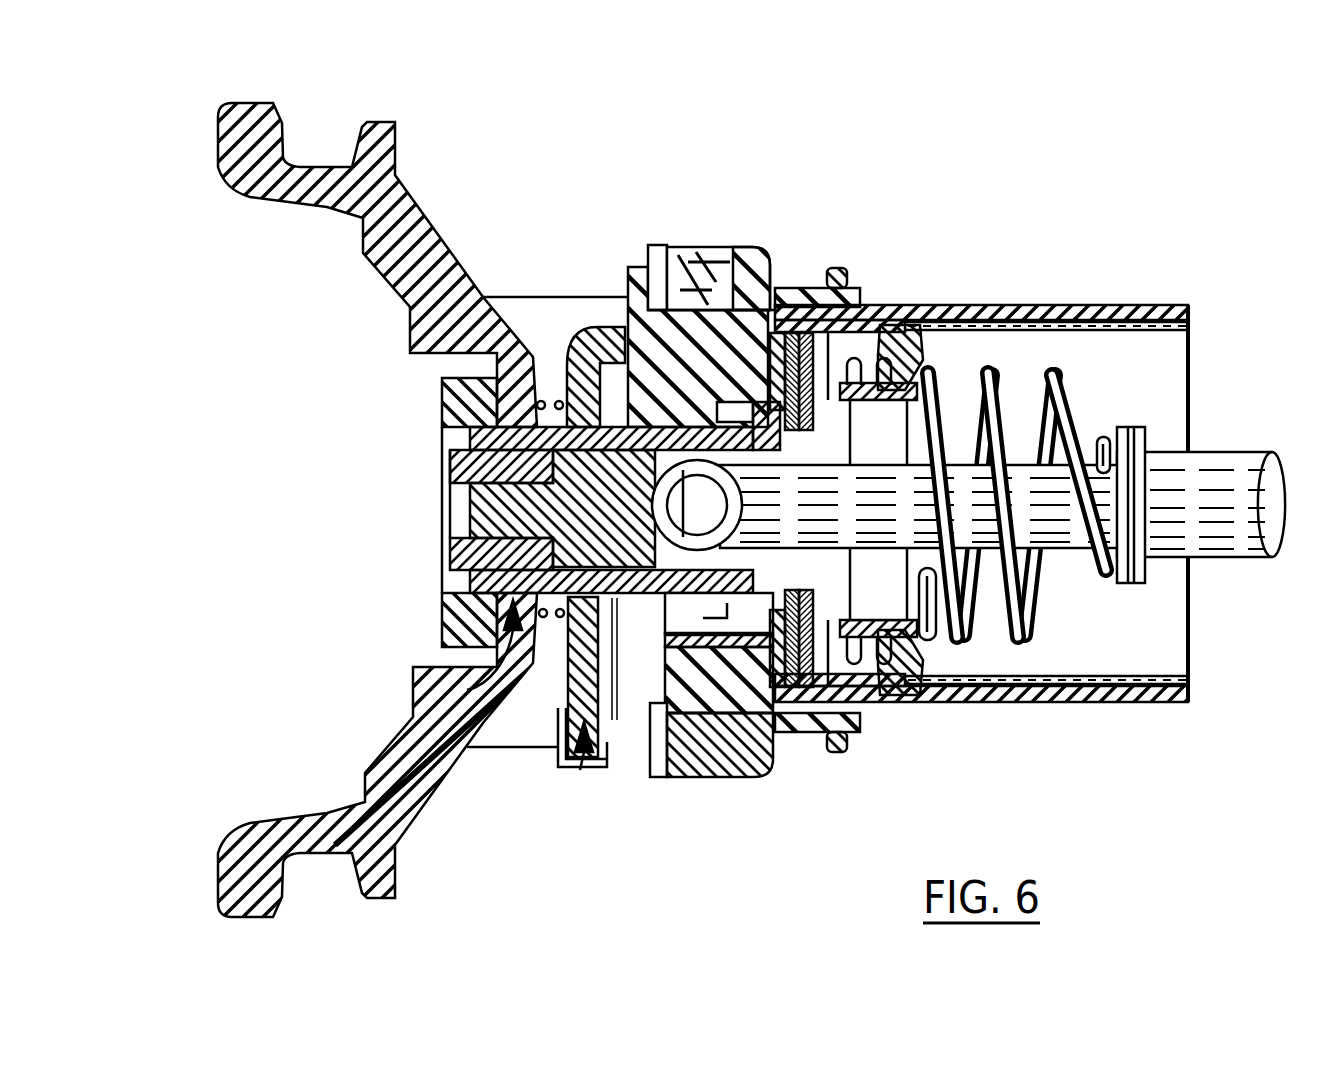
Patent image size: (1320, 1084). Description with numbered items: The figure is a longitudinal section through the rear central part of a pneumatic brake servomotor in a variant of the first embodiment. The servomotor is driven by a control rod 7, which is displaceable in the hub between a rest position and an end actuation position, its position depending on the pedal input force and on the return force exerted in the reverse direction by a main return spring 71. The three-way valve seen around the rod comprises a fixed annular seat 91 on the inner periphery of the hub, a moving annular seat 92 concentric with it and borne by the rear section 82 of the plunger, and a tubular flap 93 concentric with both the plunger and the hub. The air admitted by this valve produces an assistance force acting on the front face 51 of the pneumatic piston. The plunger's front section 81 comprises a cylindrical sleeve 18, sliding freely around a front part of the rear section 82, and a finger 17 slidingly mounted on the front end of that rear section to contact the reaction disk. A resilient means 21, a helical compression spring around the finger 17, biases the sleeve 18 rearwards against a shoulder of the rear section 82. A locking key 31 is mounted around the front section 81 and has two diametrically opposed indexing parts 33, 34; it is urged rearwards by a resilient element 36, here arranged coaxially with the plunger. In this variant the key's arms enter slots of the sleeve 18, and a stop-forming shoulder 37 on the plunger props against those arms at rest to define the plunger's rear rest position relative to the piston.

The control rod 7 is at (1203, 490).
The finger 17 is at (473, 553).
The cylindrical sleeve 18 is at (615, 570).
The resilient means 21 is at (460, 600).
The locking key 31 is at (585, 735).
The indexing part 33 is at (622, 660).
The indexing part 34 is at (602, 327).
The resilient element 36 is at (547, 398).
The stop-forming shoulder 37 is at (470, 493).
The front face 51 is at (440, 408).
The main return spring 71 is at (1002, 398).
The front section 81 is at (467, 690).
The rear section 82 is at (765, 402).
The fixed annular seat 91 is at (748, 715).
The moving annular seat 92 is at (705, 777).
The tubular flap 93 is at (780, 612).